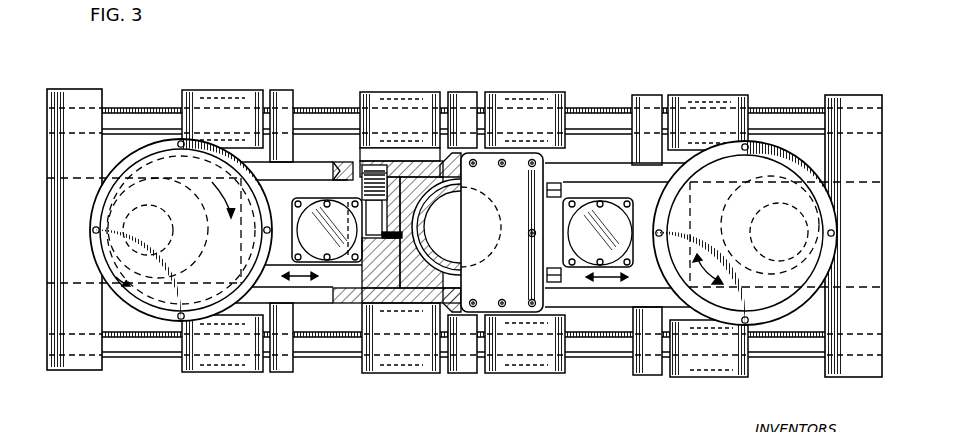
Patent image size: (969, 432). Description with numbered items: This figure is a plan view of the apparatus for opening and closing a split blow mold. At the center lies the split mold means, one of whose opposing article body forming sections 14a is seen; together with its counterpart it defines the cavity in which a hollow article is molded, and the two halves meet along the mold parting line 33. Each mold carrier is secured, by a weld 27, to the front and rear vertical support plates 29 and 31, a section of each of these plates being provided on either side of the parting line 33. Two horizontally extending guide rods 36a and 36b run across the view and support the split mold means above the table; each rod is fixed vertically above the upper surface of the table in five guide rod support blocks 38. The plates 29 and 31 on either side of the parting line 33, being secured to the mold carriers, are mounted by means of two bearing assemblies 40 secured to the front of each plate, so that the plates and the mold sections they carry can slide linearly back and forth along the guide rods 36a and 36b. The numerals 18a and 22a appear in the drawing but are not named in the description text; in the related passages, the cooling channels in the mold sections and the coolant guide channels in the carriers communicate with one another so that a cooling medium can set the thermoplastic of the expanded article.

The article body forming section 14a is at (410, 282).
The bearing ring 18a is at (448, 275).
The housing wall 22a is at (397, 282).
The weld 27 is at (350, 177).
The front vertical support plate 29 is at (338, 168).
The rear vertical support plate 31 is at (337, 300).
The mold parting line 33 is at (467, 258).
The guide rod 36a is at (755, 122).
The guide rod 36b is at (770, 347).
The guide rod support block 38 is at (88, 97).
The bearing assembly 40 is at (197, 90).